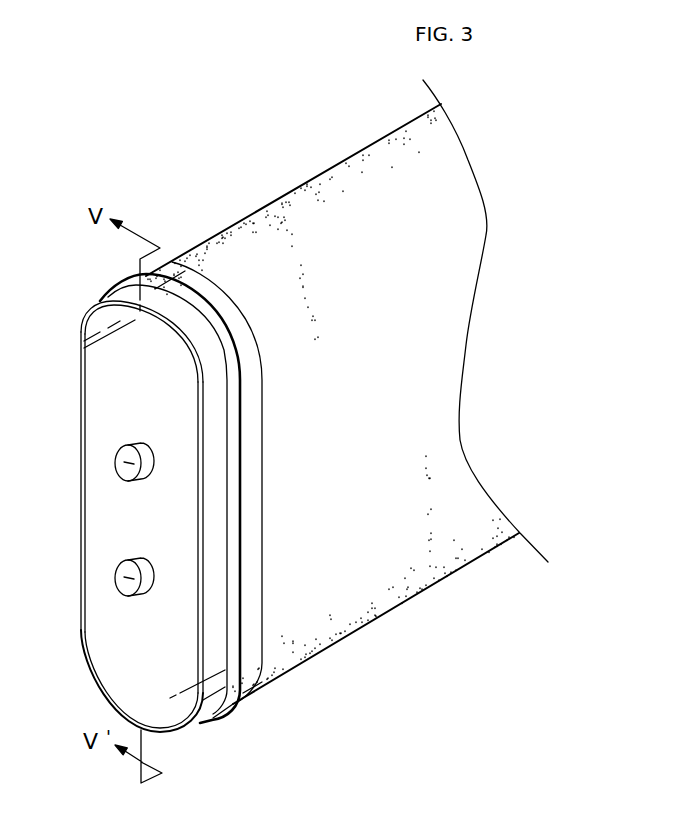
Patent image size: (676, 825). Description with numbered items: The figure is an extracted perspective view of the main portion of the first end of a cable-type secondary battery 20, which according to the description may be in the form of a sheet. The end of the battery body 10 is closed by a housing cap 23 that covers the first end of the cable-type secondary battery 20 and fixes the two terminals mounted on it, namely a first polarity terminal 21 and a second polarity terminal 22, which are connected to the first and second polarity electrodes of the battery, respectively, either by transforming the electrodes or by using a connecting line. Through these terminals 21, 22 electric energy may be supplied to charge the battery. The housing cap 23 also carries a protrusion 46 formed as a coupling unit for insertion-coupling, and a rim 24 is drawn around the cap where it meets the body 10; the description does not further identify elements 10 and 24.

The housing 10 is at (251, 220).
The cable-type secondary battery 20 is at (264, 157).
The first polarity terminal 21 is at (116, 461).
The second polarity terminal 22 is at (116, 576).
The housing cap 23 is at (120, 357).
The rim 24 is at (176, 288).
The protrusion for insertion-coupling 46 is at (235, 700).